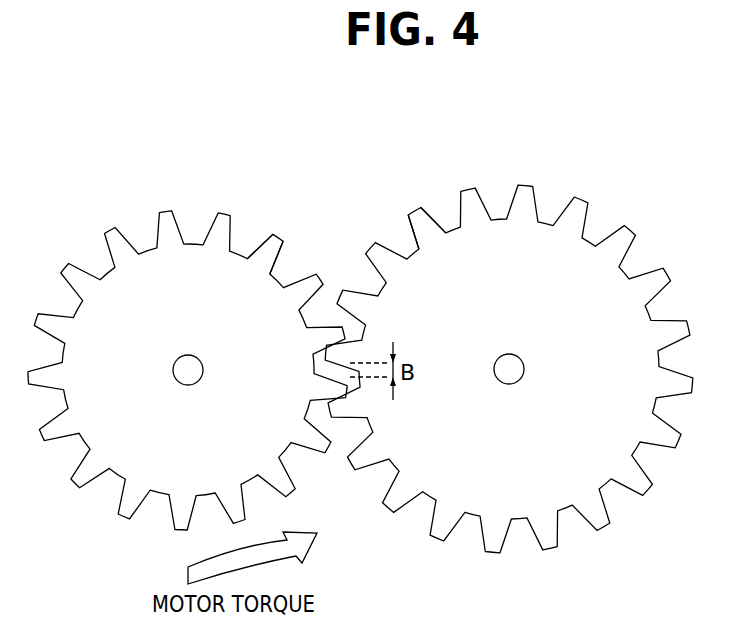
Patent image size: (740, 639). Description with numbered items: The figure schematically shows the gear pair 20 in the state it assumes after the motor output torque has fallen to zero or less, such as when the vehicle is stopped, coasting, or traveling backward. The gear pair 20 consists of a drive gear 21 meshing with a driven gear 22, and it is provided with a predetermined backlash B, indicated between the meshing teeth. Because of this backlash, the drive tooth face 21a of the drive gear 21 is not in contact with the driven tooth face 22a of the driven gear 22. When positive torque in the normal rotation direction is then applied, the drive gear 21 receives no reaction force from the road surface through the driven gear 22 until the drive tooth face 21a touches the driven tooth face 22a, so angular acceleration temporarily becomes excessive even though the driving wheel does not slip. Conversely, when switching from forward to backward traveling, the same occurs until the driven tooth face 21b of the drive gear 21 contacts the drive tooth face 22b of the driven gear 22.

The gear pair 20 is at (347, 166).
The drive gear 21 is at (186, 196).
The drive tooth face 21a is at (256, 238).
The driven tooth face 21b is at (281, 257).
The driven gear 22 is at (554, 184).
The driven tooth face 22a is at (410, 237).
The drive tooth face 22b is at (438, 220).